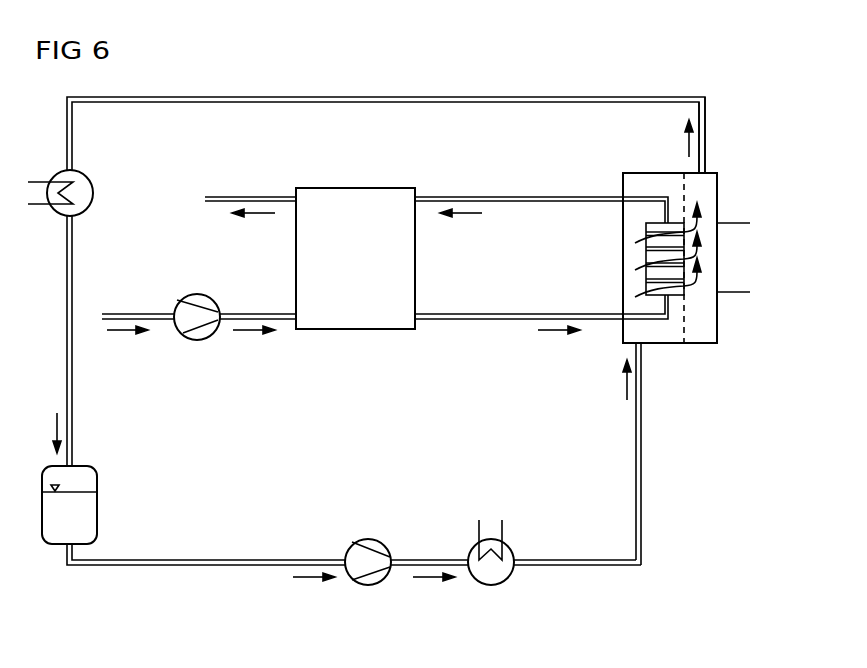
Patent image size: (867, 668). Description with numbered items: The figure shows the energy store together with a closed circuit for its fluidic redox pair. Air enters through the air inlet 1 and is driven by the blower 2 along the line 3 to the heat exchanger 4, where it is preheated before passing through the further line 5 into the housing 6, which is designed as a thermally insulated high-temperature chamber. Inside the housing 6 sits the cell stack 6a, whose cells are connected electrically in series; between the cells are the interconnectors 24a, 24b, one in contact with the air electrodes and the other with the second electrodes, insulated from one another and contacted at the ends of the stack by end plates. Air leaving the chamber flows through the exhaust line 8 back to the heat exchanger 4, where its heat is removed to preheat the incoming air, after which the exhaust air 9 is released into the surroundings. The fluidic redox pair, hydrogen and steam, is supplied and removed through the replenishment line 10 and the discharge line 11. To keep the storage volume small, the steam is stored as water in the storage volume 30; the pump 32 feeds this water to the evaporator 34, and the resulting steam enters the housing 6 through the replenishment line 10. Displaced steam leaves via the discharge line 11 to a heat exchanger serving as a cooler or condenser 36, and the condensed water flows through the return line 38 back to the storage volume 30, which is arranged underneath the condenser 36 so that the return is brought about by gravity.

The air inlet 1 is at (127, 312).
The blower 2 is at (197, 294).
The line 3 is at (255, 312).
The heat exchanger 4 is at (352, 188).
The further line 5 is at (524, 313).
The housing 6 is at (642, 173).
The cell stack 6a is at (645, 253).
The exhaust line 8 is at (520, 197).
The exhaust air 9 is at (255, 197).
The replenishment line 10 is at (641, 378).
The discharge line 11 is at (700, 140).
The interconnector 24a is at (740, 222).
The interconnector 24b is at (743, 296).
The storage volume 30 is at (88, 517).
The pump 32 is at (368, 585).
The evaporator 34 is at (490, 585).
The condenser 36 is at (93, 193).
The return line 38 is at (73, 402).